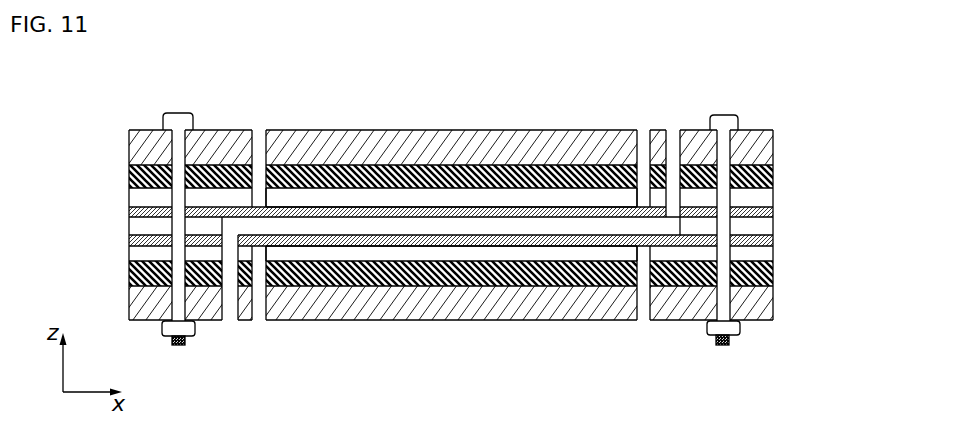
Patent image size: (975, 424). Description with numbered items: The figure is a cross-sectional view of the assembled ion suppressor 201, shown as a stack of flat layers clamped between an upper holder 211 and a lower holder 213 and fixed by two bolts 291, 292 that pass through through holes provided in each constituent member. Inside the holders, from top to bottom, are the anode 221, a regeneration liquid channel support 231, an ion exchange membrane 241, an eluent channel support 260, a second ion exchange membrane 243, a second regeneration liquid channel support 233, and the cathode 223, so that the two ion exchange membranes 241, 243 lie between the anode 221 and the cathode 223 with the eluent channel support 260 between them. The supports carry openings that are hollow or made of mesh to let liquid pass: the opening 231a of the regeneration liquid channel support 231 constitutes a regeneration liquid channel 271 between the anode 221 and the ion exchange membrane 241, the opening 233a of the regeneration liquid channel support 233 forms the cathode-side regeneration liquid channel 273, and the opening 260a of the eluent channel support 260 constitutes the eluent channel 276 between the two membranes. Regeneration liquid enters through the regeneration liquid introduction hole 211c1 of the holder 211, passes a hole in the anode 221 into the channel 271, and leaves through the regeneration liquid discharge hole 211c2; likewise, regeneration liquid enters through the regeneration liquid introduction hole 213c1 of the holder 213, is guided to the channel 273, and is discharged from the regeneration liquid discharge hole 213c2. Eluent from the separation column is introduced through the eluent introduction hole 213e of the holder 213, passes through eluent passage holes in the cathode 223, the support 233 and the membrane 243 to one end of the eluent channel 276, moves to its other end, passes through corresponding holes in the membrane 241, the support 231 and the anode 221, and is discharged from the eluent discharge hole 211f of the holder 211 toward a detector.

The ion suppressor 201 is at (99, 130).
The holder 211 is at (735, 162).
The holder 213 is at (766, 300).
The anode 221 is at (772, 176).
The cathode 223 is at (770, 273).
The regeneration liquid channel support 231 is at (765, 198).
The regeneration liquid channel support 233 is at (766, 254).
The ion exchange membrane 241 is at (767, 212).
The ion exchange membrane 243 is at (770, 240).
The eluent channel support 260 is at (766, 227).
The opening 231a is at (398, 190).
The opening 233a is at (402, 264).
The opening 260a is at (476, 212).
The regeneration liquid channel 271 is at (451, 139).
The regeneration liquid channel 273 is at (451, 317).
The eluent channel 276 is at (451, 153).
The regeneration liquid introduction hole 211c1 is at (643, 65).
The regeneration liquid discharge hole 211c2 is at (320, 129).
The eluent discharge hole 211f is at (718, 107).
The regeneration liquid introduction hole 213c1 is at (642, 385).
The regeneration liquid discharge hole 213c2 is at (320, 342).
The eluent introduction hole 213e is at (229, 332).
The bolt 291 is at (176, 120).
The bolt 292 is at (722, 118).